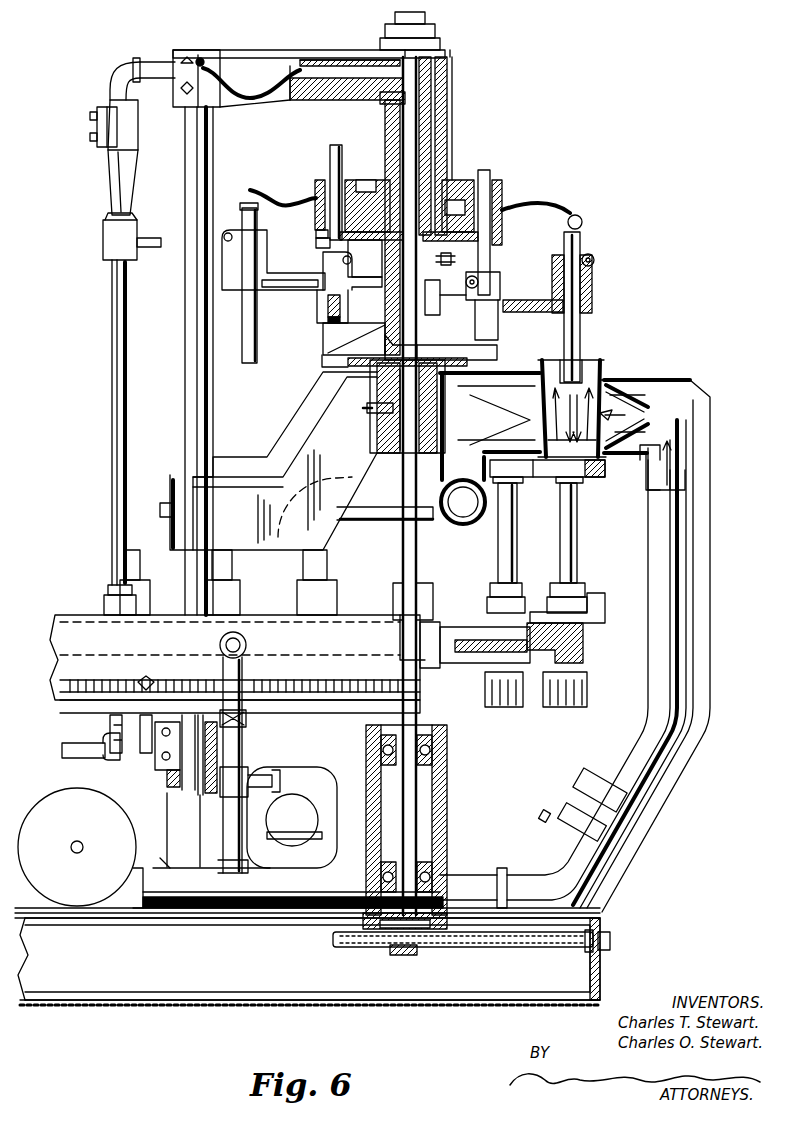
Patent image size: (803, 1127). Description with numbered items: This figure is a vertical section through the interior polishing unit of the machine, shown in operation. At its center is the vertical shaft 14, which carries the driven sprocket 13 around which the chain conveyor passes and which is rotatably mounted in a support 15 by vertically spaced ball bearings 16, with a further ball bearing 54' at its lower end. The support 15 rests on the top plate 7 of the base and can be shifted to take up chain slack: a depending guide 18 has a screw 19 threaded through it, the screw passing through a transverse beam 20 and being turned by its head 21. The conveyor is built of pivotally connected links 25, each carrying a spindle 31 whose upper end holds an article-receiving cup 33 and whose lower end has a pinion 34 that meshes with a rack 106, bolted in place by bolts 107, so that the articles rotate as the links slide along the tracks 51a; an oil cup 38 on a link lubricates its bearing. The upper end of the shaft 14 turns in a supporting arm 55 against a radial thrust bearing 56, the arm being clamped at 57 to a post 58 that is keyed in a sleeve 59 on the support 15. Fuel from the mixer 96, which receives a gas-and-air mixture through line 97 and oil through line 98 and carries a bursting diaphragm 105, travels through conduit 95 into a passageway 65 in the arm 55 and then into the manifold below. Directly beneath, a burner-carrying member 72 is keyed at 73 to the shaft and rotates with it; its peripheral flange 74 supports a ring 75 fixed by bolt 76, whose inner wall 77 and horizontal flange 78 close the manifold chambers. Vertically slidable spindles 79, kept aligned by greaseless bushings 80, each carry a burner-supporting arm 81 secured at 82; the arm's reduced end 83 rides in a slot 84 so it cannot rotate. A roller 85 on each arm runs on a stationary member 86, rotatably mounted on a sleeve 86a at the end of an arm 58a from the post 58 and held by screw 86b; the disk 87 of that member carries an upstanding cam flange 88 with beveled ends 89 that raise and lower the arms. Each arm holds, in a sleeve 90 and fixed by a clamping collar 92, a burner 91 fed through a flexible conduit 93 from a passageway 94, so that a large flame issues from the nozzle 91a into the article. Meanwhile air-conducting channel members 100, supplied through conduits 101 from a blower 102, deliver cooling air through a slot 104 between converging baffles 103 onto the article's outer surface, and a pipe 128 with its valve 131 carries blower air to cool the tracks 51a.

The top plate 7 is at (470, 1005).
The driven sprocket 13 is at (462, 648).
The shaft 14 is at (440, 800).
The support 15 is at (347, 862).
The ball bearings 16 is at (440, 870).
The depending guide 18 is at (405, 955).
The screw 19 is at (470, 945).
The transverse beam 20 is at (600, 980).
The head 21 is at (612, 940).
The links 25 is at (583, 640).
The spindle 31 is at (577, 510).
The cup or article receiving chuck 33 is at (582, 478).
The pinion 34 is at (587, 693).
The oil cup 38 is at (605, 603).
The tracks 51a is at (80, 632).
The ball bearing 54' is at (405, 944).
The supporting arm 55 is at (322, 50).
The radial thrust bearing 56 is at (440, 36).
The clamp 57 is at (192, 55).
The post 58 is at (192, 323).
The arm 58a is at (252, 523).
The sleeve 59 is at (180, 790).
The passageway 65 is at (340, 75).
The burner-carrying member 72 is at (325, 293).
The key 73 is at (455, 257).
The peripheral flange 74 is at (316, 234).
The ring 75 is at (315, 218).
The bolt 76 is at (320, 244).
The inner vertical wall 77 is at (318, 192).
The horizontal flange 78 is at (360, 180).
The spindles 79 is at (330, 160).
The greaseless bushing 80 is at (502, 195).
The burner-supporting arm 81 is at (520, 298).
The securing point 82 is at (492, 276).
The reduced inner end 83 is at (432, 315).
The vertical slot or guide 84 is at (354, 339).
The roller 85 is at (330, 308).
The member 86 is at (377, 390).
The sleeve 86a is at (395, 437).
The screw 86b is at (367, 410).
The disk or plate 87 is at (497, 352).
The upstanding flange 88 is at (343, 325).
The bevel 89 is at (325, 360).
The sleeve 90 is at (592, 278).
The burner tube 91 is at (594, 296).
The nozzle 91a is at (584, 375).
The clamping collar 92 is at (596, 256).
The flexible conduit 93 is at (560, 208).
The passageway 94 is at (462, 180).
The conduit 95 is at (244, 90).
The mixer 96 is at (118, 183).
The line 97 is at (113, 284).
The line 98 is at (150, 240).
The air-conducting channel members 100 is at (510, 480).
The conduits 101 is at (370, 502).
The blower 102 is at (72, 815).
The converging baffle members 103 is at (648, 432).
The slot 104 is at (648, 418).
The diaphragm 105 is at (92, 127).
The rack 106 is at (60, 690).
The bolts 107 is at (150, 686).
The pipe 128 is at (222, 830).
The valve 131 is at (250, 778).